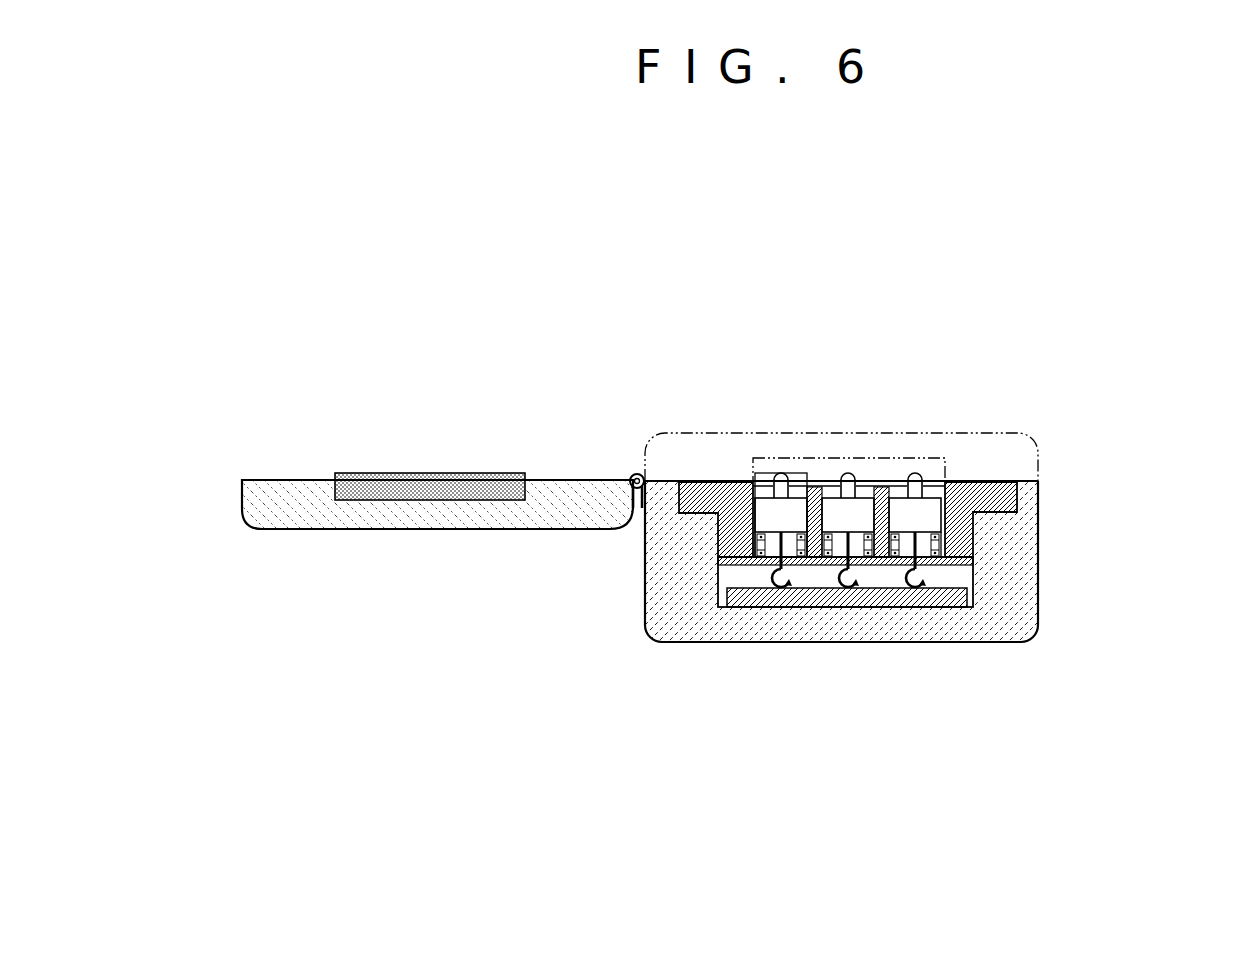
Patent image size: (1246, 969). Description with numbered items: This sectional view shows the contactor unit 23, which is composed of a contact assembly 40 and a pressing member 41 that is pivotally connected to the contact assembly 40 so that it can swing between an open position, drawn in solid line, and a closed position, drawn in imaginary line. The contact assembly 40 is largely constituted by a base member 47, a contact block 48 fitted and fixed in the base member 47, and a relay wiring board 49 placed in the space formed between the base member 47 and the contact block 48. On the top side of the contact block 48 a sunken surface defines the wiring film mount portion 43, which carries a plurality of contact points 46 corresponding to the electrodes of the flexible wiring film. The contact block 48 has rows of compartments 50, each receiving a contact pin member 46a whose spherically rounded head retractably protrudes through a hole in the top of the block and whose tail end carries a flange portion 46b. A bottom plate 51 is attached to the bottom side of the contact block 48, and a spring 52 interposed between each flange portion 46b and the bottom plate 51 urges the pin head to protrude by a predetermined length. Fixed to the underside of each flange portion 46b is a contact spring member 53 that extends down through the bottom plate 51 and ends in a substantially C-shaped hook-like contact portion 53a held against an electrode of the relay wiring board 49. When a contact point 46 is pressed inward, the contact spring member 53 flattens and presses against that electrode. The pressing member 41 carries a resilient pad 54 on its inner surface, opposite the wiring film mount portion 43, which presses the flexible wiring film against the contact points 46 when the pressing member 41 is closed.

The contactor unit 23 is at (837, 313).
The contact assembly 40 is at (630, 617).
The pressing member 41 is at (310, 541).
The wiring film mount portion 43 is at (820, 481).
The contact point 46 is at (770, 458).
The contact pin member 46a is at (778, 473).
The flange portion 46b is at (763, 503).
The base member 47 is at (1022, 565).
The contact block 48 is at (1007, 481).
The relay wiring board 49 is at (776, 601).
The compartment 50 is at (772, 552).
The bottom plate 51 is at (975, 560).
The spring 52 is at (768, 551).
The contact spring member 53 is at (790, 568).
The hook-like contact portion 53a is at (790, 586).
The resilient pad 54 is at (437, 482).